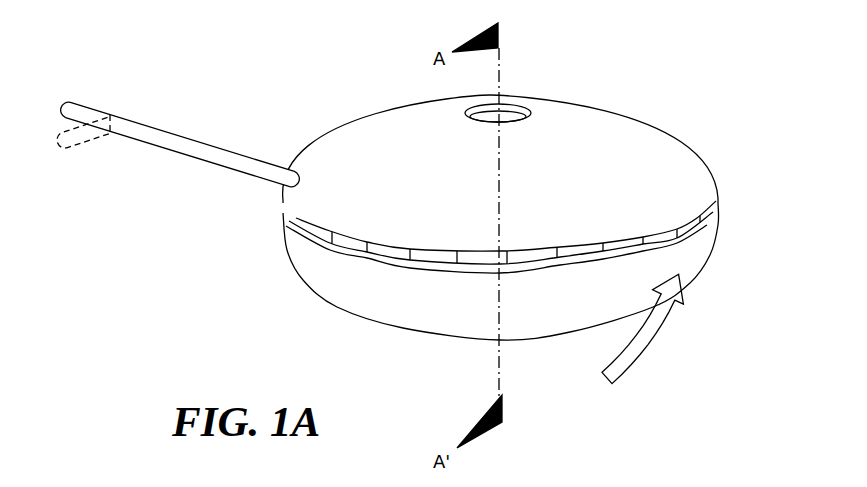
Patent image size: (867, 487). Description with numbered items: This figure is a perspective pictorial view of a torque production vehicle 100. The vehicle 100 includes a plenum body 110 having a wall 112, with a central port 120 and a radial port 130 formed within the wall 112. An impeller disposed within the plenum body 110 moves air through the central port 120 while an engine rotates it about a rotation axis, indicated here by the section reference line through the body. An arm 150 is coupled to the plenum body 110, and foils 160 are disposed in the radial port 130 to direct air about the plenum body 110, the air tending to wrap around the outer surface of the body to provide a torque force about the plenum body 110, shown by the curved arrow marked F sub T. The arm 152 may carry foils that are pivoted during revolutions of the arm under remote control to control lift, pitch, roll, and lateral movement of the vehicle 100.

The vehicle 100 is at (333, 68).
The plenum body 110 is at (608, 110).
The wall 112 is at (286, 216).
The central port 120 is at (507, 117).
The radial port 130 is at (716, 203).
The arm 150 is at (171, 137).
The arm 152 is at (79, 104).
The foils 160 is at (663, 237).